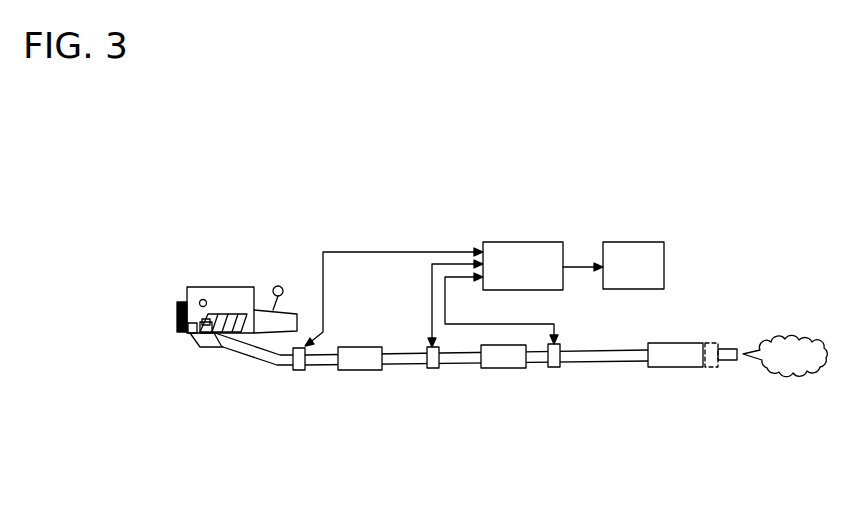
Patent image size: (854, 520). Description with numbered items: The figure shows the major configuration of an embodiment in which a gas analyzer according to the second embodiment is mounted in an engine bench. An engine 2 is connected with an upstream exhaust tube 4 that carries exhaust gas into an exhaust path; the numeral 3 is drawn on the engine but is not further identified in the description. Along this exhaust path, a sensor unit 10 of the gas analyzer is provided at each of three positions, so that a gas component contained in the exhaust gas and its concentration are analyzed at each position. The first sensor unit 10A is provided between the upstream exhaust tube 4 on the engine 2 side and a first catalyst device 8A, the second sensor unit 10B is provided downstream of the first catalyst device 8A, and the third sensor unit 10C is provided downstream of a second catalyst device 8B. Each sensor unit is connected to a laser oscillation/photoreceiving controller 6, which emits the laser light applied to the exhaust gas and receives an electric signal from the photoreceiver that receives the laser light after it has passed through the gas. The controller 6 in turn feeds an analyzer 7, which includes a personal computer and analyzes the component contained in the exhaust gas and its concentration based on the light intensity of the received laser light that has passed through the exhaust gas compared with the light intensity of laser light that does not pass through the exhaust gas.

The engine 2 is at (198, 288).
The cylinder 3 is at (220, 328).
The upstream exhaust tube 4 is at (250, 347).
The laser oscillation/photoreceiving controller 6 is at (518, 250).
The analyzer 7 is at (636, 248).
The first catalyst device 8A is at (358, 362).
The second catalyst device 8B is at (502, 360).
The sensor unit 10 is at (440, 234).
The first sensor unit 10A is at (298, 370).
The second sensor unit 10B is at (433, 368).
The third sensor unit 10C is at (555, 367).